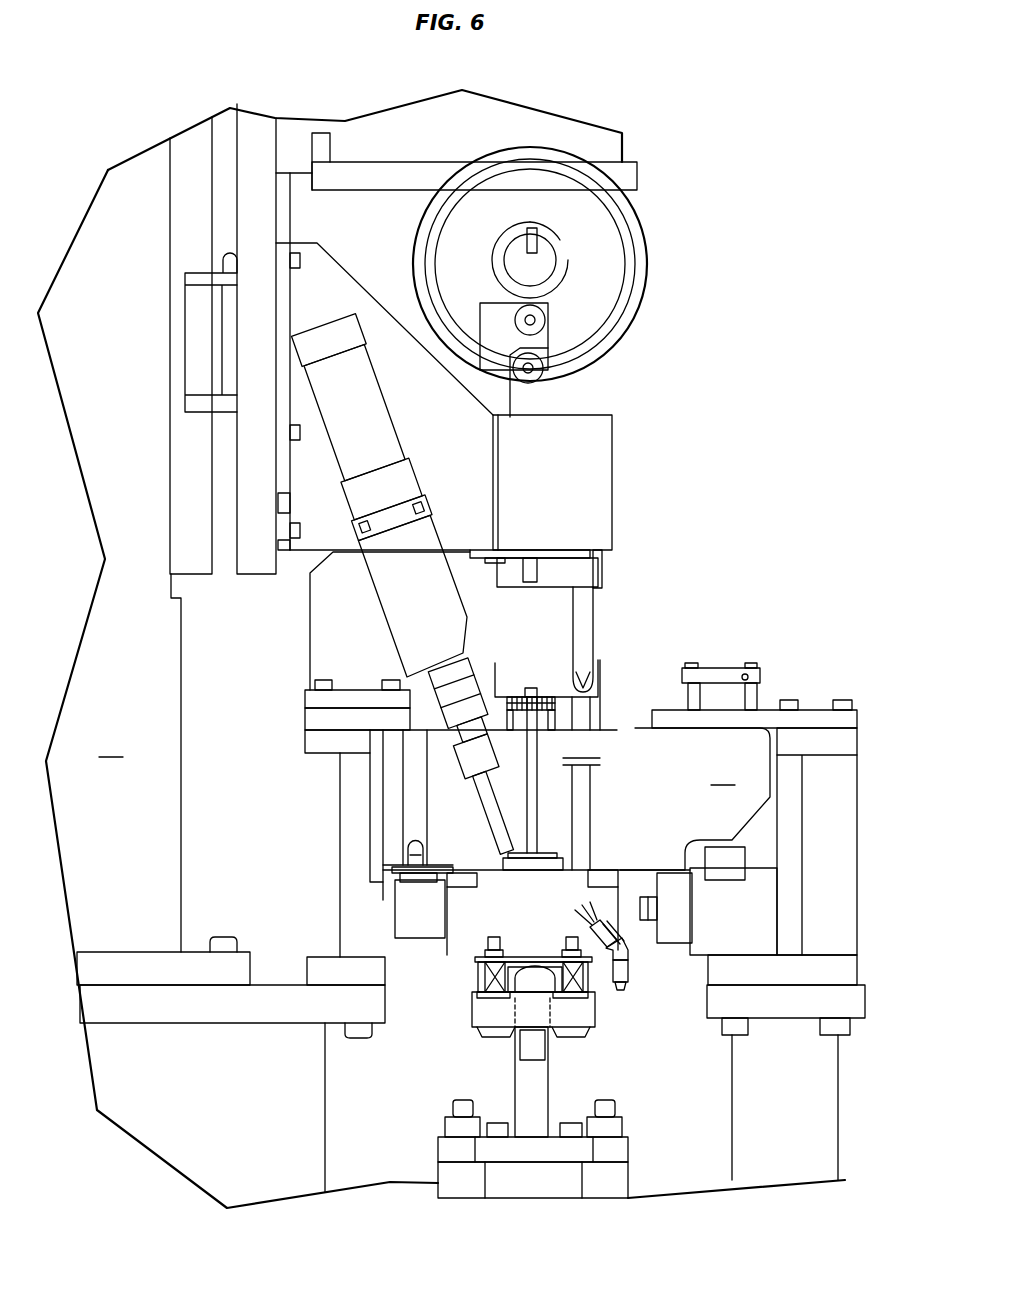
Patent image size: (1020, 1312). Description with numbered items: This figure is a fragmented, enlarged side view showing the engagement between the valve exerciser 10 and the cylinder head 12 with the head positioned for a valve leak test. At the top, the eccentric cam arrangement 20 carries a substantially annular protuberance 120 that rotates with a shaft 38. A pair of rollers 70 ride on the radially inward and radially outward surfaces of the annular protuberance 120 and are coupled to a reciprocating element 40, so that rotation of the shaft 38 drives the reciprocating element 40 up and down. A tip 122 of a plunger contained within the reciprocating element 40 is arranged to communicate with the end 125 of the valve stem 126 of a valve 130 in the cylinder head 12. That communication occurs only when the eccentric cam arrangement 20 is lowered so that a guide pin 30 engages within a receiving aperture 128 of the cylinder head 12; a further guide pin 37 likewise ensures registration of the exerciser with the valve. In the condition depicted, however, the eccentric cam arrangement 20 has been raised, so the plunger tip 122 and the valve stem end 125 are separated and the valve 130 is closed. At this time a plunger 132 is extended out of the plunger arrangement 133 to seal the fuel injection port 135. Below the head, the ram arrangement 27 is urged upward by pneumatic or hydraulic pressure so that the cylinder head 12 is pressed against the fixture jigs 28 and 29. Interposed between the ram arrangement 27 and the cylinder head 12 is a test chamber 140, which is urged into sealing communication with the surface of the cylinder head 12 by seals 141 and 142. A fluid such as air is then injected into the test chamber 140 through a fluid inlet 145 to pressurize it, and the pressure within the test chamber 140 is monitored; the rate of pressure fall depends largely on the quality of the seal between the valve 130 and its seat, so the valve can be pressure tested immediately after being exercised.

The valve exerciser 10 is at (441, 649).
The cylinder head 12 is at (742, 954).
The eccentric cam arrangement 20 is at (645, 207).
The ram arrangement 27 is at (545, 1087).
The fixture jig 28 is at (350, 703).
The fixture jig 29 is at (768, 717).
The guide pin 30 is at (643, 282).
The guide pin 37 is at (585, 627).
The shaft 38 is at (537, 265).
The reciprocating element 40 is at (543, 405).
The rollers 70 is at (514, 366).
The substantially annular protuberance 120 is at (497, 167).
The plunger tip 122 is at (530, 583).
The valve stem end 125 is at (532, 688).
The valve stem 126 is at (537, 790).
The receiving aperture 128 is at (586, 722).
The valve 130 is at (532, 872).
The plunger 132 is at (452, 676).
The plunger arrangement 133 is at (387, 607).
The fuel injection port 135 is at (457, 725).
The test chamber 140 is at (447, 958).
The seal 141 is at (461, 882).
The seal 142 is at (610, 870).
The fluid inlet 145 is at (630, 962).